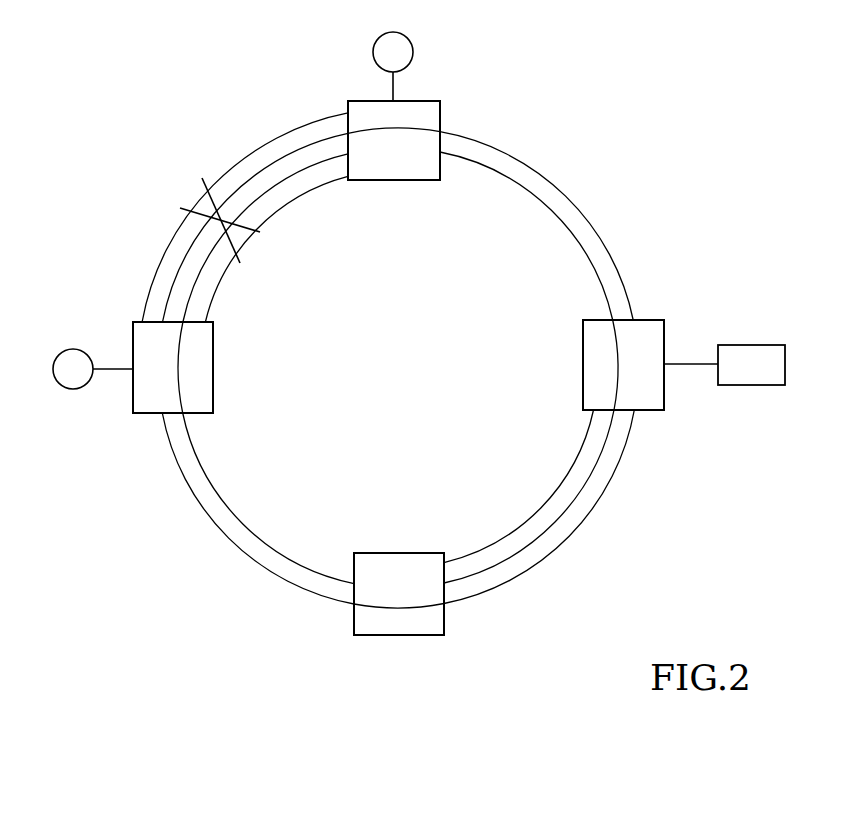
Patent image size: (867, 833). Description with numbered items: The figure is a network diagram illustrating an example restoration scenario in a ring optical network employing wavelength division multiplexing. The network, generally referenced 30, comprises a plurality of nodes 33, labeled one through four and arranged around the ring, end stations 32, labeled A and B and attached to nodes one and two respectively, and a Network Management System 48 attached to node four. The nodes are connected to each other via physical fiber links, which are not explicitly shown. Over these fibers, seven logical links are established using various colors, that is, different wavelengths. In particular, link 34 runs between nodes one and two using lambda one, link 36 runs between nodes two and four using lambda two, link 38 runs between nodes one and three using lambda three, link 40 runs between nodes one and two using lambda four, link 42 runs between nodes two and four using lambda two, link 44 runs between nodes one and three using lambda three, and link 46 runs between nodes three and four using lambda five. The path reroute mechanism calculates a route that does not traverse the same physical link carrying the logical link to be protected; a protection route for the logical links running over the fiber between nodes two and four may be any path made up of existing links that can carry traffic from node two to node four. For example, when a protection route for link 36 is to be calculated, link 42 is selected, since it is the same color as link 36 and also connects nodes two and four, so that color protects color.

The network 30 is at (115, 533).
The end stations 32 is at (412, 38).
The nodes 33 is at (423, 98).
The link 34 is at (308, 120).
The link 36 is at (320, 140).
The link 38 is at (298, 167).
The link 40 is at (273, 207).
The link 42 is at (497, 585).
The link 44 is at (592, 473).
The link 46 is at (528, 518).
The Network Management System (NMS) 48 is at (740, 343).